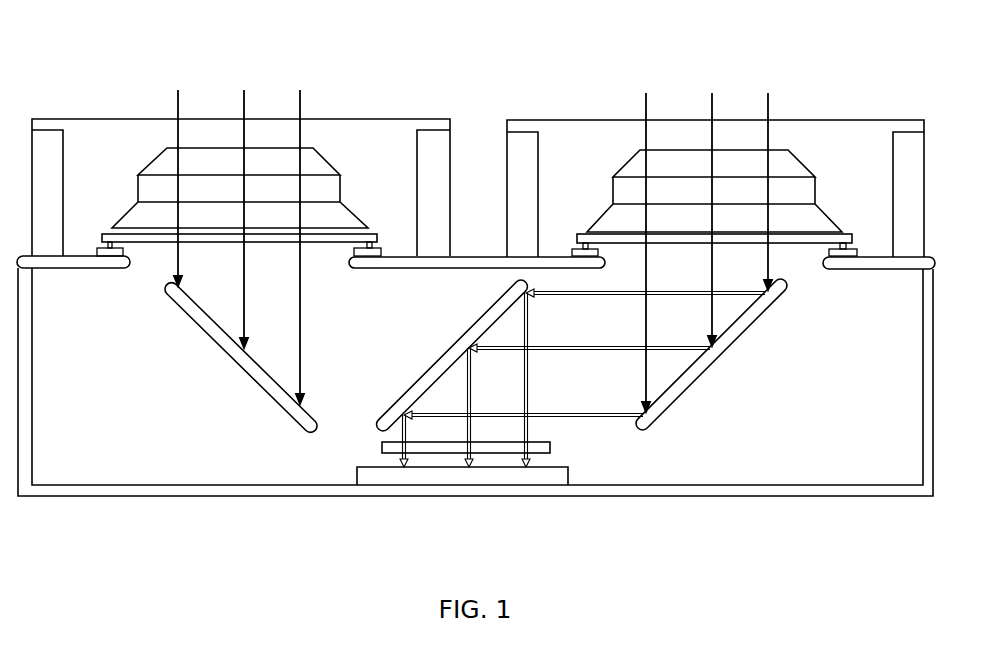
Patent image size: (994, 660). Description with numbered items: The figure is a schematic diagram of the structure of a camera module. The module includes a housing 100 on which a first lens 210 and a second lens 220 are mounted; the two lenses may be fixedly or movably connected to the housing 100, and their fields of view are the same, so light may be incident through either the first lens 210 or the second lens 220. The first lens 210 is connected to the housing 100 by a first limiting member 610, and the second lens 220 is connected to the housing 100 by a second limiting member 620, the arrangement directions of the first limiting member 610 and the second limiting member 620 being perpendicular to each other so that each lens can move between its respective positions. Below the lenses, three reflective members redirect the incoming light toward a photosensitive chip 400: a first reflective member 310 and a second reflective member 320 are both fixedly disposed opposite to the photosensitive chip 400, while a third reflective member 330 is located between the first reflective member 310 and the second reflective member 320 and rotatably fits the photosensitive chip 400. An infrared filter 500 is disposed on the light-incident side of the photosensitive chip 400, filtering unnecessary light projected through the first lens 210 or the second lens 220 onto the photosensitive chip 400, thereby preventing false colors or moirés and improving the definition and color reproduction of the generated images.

The housing 100 is at (433, 157).
The first lens 210 is at (278, 163).
The second lens 220 is at (672, 163).
The first reflective member 310 is at (278, 393).
The second reflective member 320 is at (658, 413).
The third reflective member 330 is at (380, 423).
The photosensitive chip 400 is at (502, 478).
The infrared filter 500 is at (538, 447).
The first limiting member 610 is at (110, 244).
The second limiting member 620 is at (847, 244).